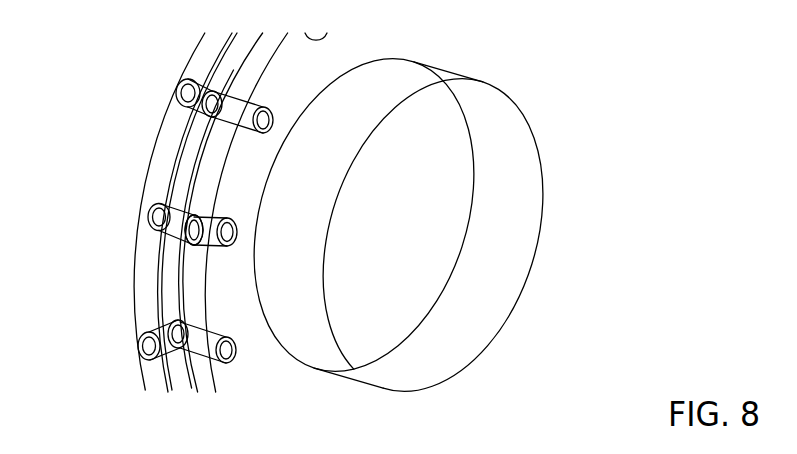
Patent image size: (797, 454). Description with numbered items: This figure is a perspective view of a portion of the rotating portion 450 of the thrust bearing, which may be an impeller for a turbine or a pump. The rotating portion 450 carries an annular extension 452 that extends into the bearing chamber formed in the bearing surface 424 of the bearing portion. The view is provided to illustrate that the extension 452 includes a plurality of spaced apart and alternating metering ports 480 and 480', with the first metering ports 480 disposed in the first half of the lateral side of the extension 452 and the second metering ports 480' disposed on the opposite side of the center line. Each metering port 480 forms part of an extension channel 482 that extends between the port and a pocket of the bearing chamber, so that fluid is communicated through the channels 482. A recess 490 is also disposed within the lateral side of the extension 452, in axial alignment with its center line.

The bearing surface 424 is at (397, 77).
The rotating portion 450 is at (117, 243).
The extension 452 is at (142, 209).
The recess 490 is at (168, 276).
The first metering port 480 is at (155, 224).
The second metering port 480' is at (216, 261).
The extension channel 482 is at (238, 100).